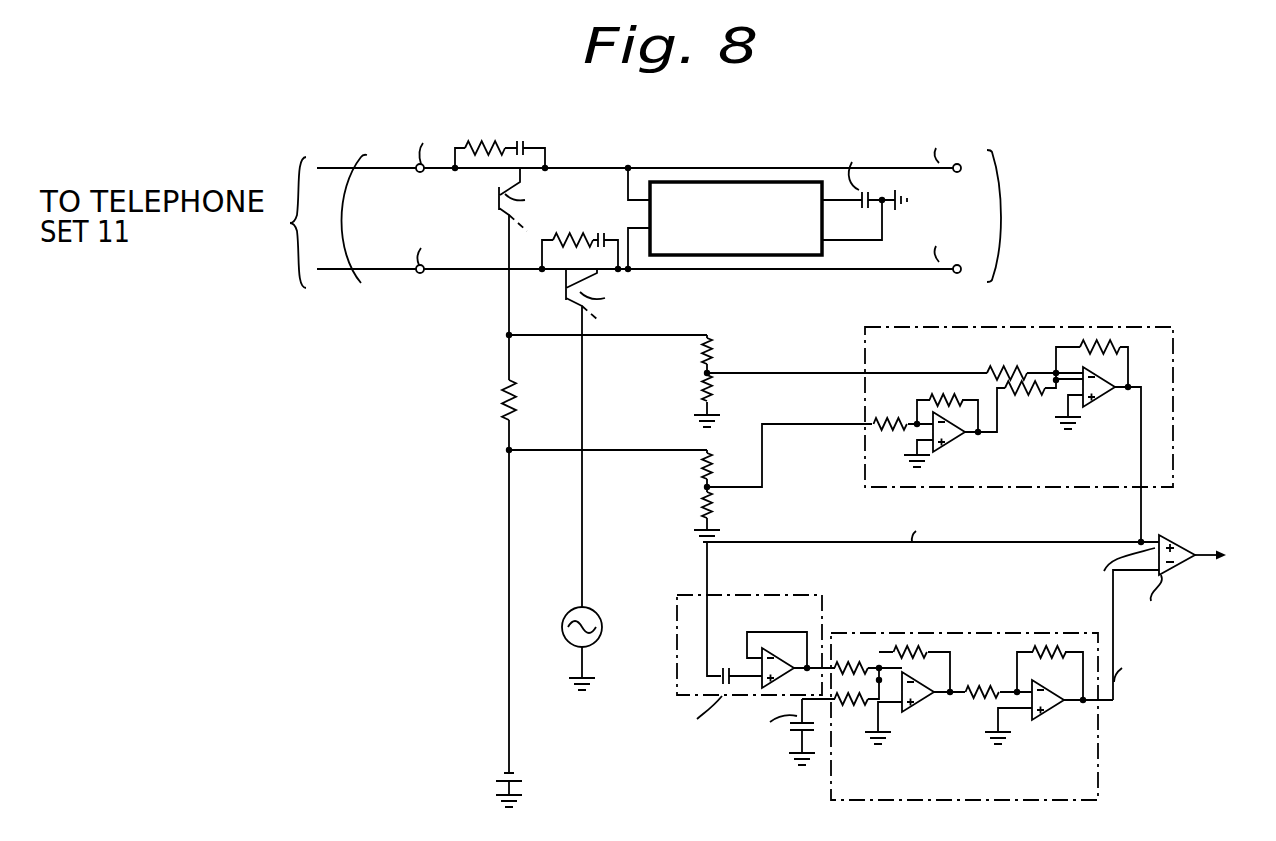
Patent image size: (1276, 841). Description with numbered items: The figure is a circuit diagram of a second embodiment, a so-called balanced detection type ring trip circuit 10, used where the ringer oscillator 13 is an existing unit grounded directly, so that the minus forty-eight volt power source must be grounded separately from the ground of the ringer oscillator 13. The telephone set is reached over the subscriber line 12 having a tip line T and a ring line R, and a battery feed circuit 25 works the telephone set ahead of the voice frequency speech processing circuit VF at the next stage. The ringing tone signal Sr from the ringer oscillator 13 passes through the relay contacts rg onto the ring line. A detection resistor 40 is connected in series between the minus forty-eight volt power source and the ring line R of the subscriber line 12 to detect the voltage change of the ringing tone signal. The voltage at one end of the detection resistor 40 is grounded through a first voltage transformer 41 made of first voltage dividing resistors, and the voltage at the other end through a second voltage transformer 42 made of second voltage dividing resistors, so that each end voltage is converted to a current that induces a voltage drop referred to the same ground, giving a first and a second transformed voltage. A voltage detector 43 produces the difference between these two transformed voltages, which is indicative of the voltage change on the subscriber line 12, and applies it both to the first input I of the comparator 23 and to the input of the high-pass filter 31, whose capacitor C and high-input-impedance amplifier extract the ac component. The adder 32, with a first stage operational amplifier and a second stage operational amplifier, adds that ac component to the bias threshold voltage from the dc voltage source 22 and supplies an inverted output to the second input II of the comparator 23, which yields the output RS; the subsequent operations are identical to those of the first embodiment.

The subscriber line 12 is at (361, 283).
The ring trip circuit 10 is at (796, 314).
The battery feed circuit 25 is at (650, 217).
The detection resistor 40 is at (502, 402).
The first voltage transformer 41 is at (690, 375).
The second voltage transformer 42 is at (690, 493).
The voltage detector 43 is at (1127, 327).
The comparator 23 is at (1179, 564).
The ringer oscillator 13 is at (576, 611).
The high-pass filter 31 is at (672, 683).
The dc voltage source 22 is at (791, 730).
The adder 32 is at (845, 802).